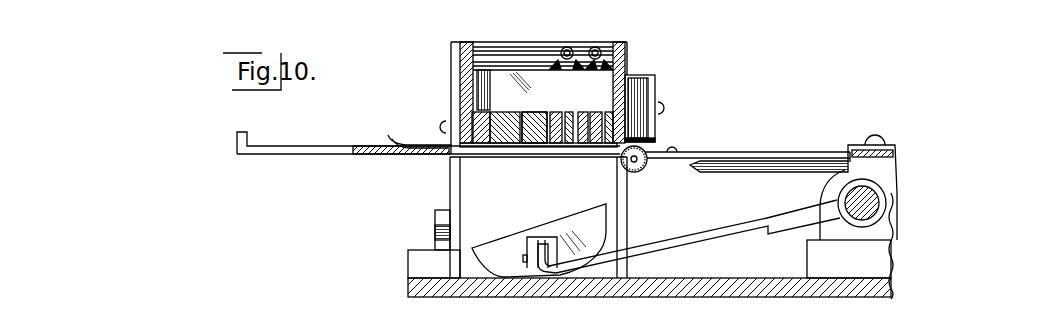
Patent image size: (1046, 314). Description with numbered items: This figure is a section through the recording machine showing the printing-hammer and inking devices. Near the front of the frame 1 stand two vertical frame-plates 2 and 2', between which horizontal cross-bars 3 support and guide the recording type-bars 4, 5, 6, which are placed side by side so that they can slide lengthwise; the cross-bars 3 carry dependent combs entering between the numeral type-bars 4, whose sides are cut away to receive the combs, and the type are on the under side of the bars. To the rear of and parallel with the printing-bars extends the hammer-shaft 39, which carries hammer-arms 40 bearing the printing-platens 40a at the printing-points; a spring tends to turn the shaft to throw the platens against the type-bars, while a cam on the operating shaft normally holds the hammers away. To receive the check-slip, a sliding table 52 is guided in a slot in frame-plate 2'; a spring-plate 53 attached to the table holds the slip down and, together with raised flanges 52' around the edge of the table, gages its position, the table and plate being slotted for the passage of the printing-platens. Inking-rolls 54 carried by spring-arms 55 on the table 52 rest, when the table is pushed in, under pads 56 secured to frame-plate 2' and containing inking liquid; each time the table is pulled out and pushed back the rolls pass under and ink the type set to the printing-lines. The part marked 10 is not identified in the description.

The frame 1 is at (725, 289).
The frame-plate 2 is at (517, 217).
The frame-plate 2' is at (633, 217).
The cross-bar 3 is at (539, 98).
The numeral type-bar 4 is at (583, 111).
The type-bar 5 is at (510, 111).
The type-bar 6 is at (540, 101).
The feed rollers 10 is at (597, 44).
The hammer-shaft 39 is at (840, 202).
The hammer-arm 40 is at (697, 235).
The printing-platen 40a is at (563, 218).
The sliding table 52 is at (747, 142).
The raised flange 52' is at (428, 159).
The spring-plate 53 is at (421, 145).
The inking-roll 54 is at (641, 171).
The spring-arm 55 is at (802, 171).
The pad 56 is at (648, 138).